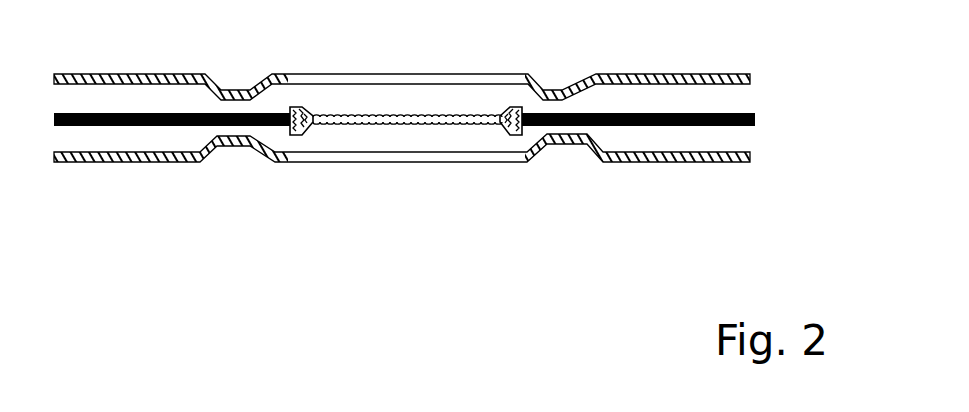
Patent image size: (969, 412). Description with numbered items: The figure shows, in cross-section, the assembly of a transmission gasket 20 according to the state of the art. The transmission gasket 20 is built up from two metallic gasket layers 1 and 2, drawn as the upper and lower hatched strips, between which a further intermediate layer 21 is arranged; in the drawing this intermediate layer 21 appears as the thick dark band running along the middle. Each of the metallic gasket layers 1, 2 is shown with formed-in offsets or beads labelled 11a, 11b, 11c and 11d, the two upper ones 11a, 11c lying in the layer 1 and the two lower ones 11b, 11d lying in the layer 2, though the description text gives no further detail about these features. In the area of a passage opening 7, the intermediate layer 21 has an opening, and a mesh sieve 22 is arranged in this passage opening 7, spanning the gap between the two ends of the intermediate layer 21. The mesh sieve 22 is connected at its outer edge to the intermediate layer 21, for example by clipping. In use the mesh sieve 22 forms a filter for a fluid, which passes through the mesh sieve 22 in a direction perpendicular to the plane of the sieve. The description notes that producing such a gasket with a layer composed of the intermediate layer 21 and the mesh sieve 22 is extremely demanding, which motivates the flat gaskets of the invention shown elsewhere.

The transmission gasket 20 is at (775, 48).
The metallic gasket layer 1 is at (682, 73).
The metallic gasket layer 2 is at (682, 162).
The constriction / indentation 11a is at (232, 92).
The constriction / indentation 11b is at (240, 138).
The constriction / indentation 11c is at (558, 95).
The constriction / indentation 11d is at (565, 140).
The intermediate layer 21 is at (742, 110).
The passage opening 7 is at (458, 115).
The mesh sieve 22 is at (367, 115).